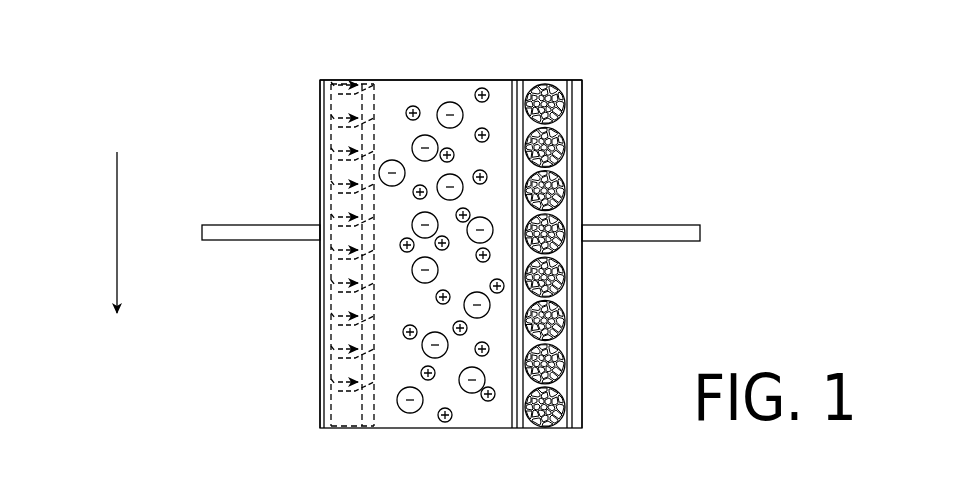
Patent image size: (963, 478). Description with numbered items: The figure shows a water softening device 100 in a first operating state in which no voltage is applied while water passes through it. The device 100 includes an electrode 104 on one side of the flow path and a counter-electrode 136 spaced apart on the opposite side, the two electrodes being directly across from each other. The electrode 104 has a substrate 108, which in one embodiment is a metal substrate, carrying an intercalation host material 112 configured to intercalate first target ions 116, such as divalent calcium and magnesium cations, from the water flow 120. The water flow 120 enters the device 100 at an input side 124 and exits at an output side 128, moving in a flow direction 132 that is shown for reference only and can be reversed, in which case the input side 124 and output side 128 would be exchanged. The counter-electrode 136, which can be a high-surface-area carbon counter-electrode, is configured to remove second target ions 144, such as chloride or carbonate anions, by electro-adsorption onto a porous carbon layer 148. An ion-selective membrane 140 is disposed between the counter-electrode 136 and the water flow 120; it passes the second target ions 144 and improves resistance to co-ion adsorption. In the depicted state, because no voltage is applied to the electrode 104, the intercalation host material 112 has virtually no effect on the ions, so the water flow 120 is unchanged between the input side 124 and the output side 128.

The device 100 is at (160, 82).
The electrode 104 is at (315, 184).
The substrate 108 is at (320, 130).
The intercalation host material 112 is at (350, 85).
The first target ions 116 is at (420, 106).
The water flow 120 is at (426, 309).
The input side 124 is at (470, 76).
The output side 128 is at (380, 430).
The flow direction 132 is at (117, 238).
The counter-electrode 136 is at (588, 123).
The ion-selective membrane 140 is at (518, 430).
The second target ions 144 is at (392, 160).
The porous carbon layer 148 is at (557, 302).